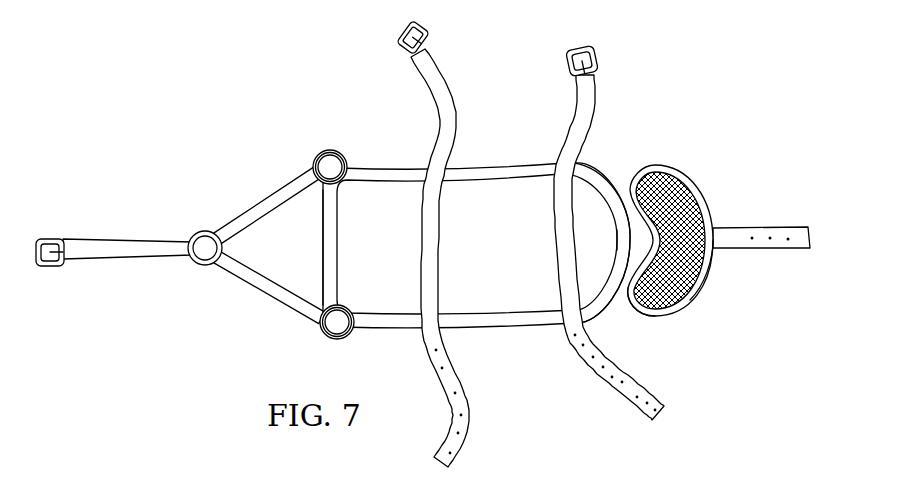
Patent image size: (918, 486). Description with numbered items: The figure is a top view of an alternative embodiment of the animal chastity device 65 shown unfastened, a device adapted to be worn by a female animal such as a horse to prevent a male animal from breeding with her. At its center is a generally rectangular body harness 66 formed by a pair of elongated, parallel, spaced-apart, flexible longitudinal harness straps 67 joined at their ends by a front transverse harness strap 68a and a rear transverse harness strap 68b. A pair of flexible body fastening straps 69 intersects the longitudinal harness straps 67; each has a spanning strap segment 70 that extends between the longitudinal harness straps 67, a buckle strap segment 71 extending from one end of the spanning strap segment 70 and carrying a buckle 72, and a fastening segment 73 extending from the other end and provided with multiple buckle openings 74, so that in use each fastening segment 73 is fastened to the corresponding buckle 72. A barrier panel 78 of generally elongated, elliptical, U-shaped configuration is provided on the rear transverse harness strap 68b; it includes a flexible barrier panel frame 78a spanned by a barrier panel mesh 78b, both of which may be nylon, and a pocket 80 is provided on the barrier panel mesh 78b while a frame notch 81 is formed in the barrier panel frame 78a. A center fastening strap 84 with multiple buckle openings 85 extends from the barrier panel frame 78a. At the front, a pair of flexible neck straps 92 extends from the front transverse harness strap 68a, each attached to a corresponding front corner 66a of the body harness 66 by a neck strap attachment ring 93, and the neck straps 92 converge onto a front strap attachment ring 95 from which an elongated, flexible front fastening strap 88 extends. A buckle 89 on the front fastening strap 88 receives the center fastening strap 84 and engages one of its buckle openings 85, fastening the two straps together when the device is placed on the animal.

The animal chastity device 65 is at (338, 100).
The body harness 66 is at (611, 325).
The front corner 66a is at (325, 152).
The longitudinal harness strap 67 is at (513, 173).
The front transverse harness strap 68a is at (333, 228).
The rear transverse harness strap 68b is at (608, 177).
The body fastening strap 69 is at (551, 349).
The spanning strap segment 70 is at (535, 258).
The buckle strap segment 71 is at (535, 258).
The buckle 72 is at (565, 55).
The fastening segment 73 is at (535, 258).
The buckle opening 74 is at (455, 393).
The barrier panel 78 is at (729, 230).
The barrier panel frame 78a is at (700, 278).
The barrier panel mesh 78b is at (667, 172).
The pocket 80 is at (707, 213).
The frame notch 81 is at (622, 265).
The center fastening strap 84 is at (788, 248).
The buckle opening 85 is at (803, 240).
The front fastening strap 88 is at (143, 250).
The buckle 89 is at (57, 238).
The neck strap 92 is at (264, 212).
The neck strap attachment ring 93 is at (342, 158).
The front strap attachment ring 95 is at (212, 266).